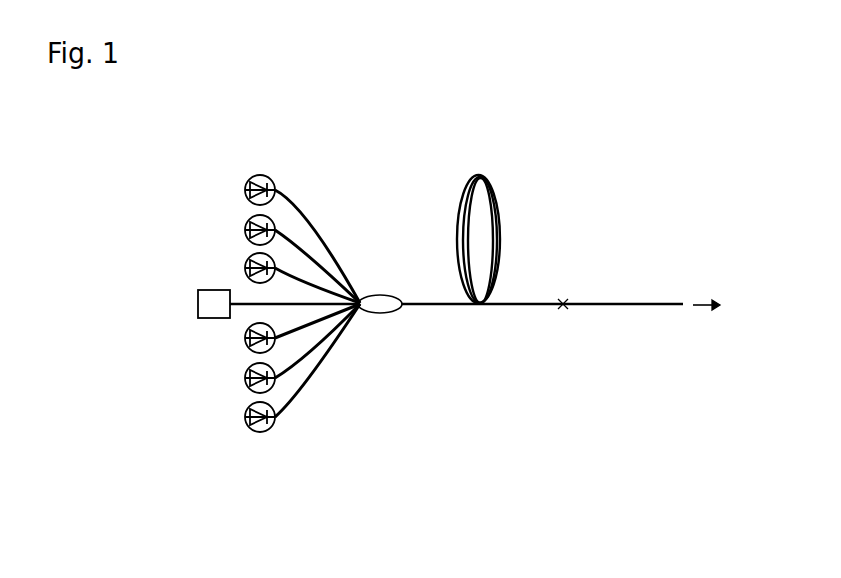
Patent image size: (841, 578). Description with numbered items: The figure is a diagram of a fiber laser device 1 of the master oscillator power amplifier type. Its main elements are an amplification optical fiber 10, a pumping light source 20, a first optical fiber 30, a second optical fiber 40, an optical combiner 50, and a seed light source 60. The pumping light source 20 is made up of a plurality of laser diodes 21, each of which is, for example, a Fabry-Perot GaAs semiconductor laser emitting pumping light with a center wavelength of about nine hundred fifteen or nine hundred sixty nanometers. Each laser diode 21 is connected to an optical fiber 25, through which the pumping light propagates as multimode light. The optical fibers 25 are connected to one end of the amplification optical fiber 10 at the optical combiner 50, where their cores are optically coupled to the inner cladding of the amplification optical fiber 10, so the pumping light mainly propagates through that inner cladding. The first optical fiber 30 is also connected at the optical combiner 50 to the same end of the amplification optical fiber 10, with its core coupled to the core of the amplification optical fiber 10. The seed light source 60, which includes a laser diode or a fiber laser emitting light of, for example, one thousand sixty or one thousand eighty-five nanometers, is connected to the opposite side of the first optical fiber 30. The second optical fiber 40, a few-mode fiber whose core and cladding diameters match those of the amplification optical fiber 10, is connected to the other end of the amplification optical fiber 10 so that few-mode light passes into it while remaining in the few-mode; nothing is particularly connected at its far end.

The fiber laser device 1 is at (586, 158).
The amplification optical fiber 10 is at (498, 304).
The pumping light source 20 is at (241, 158).
The laser diode 21 is at (247, 183).
The optical fiber 25 is at (295, 242).
The first optical fiber 30 is at (235, 300).
The second optical fiber 40 is at (643, 304).
The optical combiner 50 is at (386, 310).
The seed light source 60 is at (198, 304).